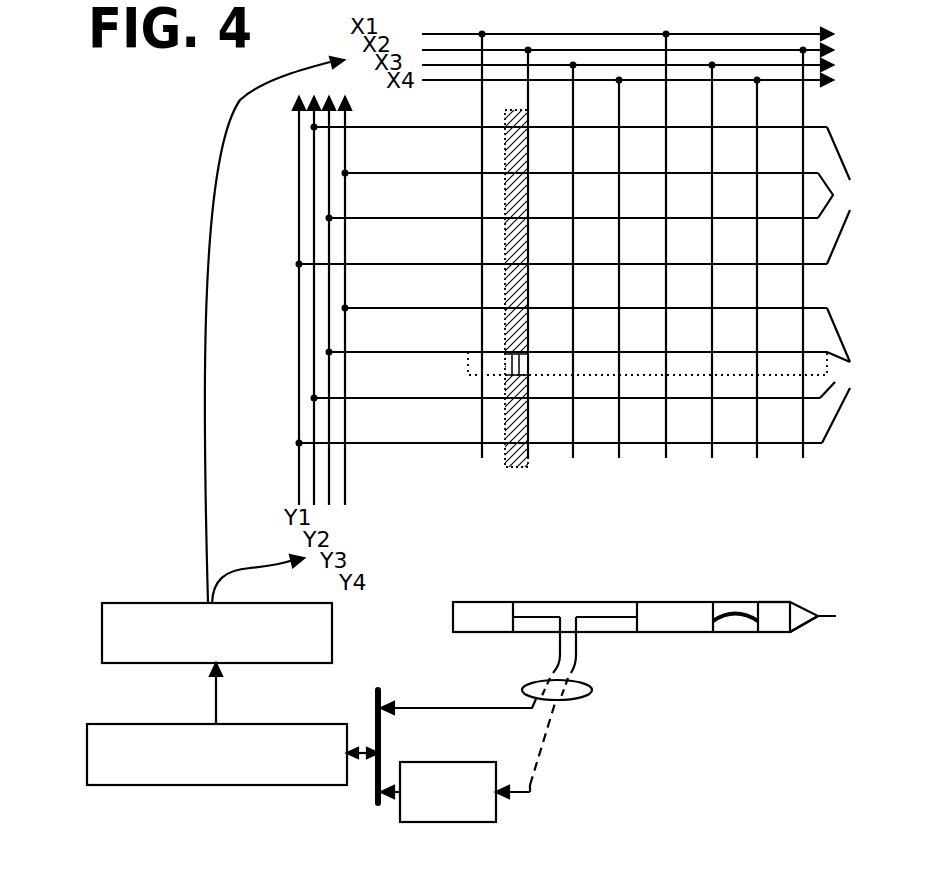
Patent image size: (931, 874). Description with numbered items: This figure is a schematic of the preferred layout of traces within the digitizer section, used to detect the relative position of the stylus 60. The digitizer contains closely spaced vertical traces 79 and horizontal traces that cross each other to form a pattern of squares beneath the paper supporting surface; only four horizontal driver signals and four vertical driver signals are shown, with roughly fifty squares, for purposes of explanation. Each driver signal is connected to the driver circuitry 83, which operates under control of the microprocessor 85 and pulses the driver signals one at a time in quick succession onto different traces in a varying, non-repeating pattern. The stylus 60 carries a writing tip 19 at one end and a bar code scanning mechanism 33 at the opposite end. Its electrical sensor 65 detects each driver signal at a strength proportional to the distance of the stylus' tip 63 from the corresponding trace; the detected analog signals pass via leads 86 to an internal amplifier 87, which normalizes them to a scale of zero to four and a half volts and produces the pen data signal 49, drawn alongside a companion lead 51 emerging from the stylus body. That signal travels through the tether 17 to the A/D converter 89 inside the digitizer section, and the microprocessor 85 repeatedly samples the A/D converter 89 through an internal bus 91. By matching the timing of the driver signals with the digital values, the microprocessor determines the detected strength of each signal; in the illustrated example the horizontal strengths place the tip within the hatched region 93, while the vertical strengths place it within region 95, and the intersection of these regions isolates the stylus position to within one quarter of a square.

The tether 17 is at (577, 700).
The writing tip 19 is at (803, 626).
The bar code scanning mechanism 33 is at (484, 600).
The pen data signal 49 is at (578, 663).
The coil lead 51 is at (556, 648).
The stylus 60 is at (569, 600).
The stylus tip 63 is at (830, 616).
The electrical sensor 65 is at (777, 600).
The vertical traces 79 is at (482, 432).
The driver circuitry 83 is at (300, 665).
The microprocessor 85 is at (283, 786).
The leads 86 is at (735, 610).
The internal amplifier 87 is at (650, 600).
The A/D converter 89 is at (443, 822).
The internal bus 91 is at (373, 790).
The hatched region 93 is at (503, 118).
The region 95 is at (468, 373).